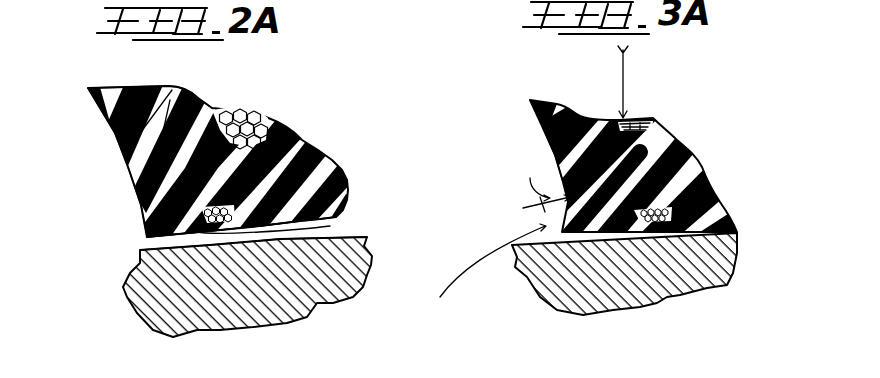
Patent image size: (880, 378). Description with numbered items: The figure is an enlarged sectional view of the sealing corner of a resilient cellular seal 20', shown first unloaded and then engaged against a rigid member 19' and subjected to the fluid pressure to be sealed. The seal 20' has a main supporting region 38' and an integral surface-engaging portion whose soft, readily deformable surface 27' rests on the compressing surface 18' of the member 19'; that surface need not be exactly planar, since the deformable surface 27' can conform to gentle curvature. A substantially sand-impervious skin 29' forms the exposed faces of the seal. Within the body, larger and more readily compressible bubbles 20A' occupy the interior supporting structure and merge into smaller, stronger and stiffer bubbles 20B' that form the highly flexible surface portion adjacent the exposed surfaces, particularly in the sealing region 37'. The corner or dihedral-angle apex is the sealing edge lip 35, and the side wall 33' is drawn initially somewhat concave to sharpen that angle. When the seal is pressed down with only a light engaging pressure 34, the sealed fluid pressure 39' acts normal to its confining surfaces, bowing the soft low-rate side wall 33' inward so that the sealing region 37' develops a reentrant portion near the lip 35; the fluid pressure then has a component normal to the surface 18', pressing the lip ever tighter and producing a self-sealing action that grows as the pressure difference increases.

In FIG. 2A, the seal 20' is at (211, 161).
In FIG. 3A, the seal 20' is at (632, 168).
In FIG. 2A, the sand impervious skin 29' is at (220, 162).
In FIG. 2A, the supporting region 38' is at (250, 121).
In FIG. 2A, the side wall 33' is at (108, 169).
In FIG. 3A, the side wall 33' is at (537, 155).
In FIG. 2A, the sealing region 37' is at (158, 216).
In FIG. 2A, the sealing lip edge 35 is at (140, 242).
In FIG. 2A, the deformable surface 27' is at (263, 234).
In FIG. 2A, the rigid surface 18' is at (273, 233).
In FIG. 2A, the member 19' is at (269, 287).
In FIG. 3A, the member 19' is at (647, 274).
In FIG. 2A, the larger bubbles 20A' is at (331, 120).
In FIG. 3A, the larger bubbles 20A' is at (662, 118).
In FIG. 2A, the smaller bubbles 20B' is at (362, 173).
In FIG. 3A, the smaller bubbles 20B' is at (698, 197).
In FIG. 3A, the light engaging pressure 34 is at (623, 72).
In FIG. 3A, the sealed fluid pressure 39' is at (490, 248).